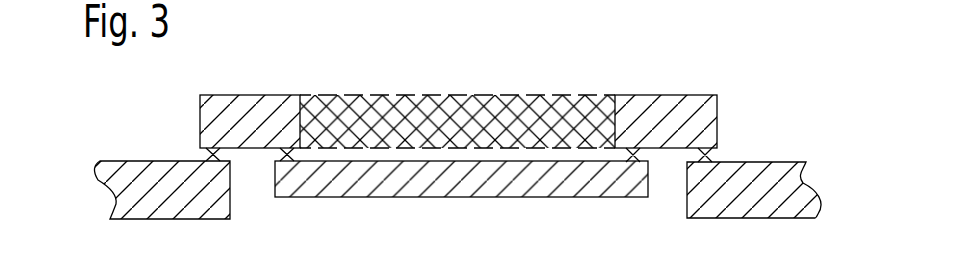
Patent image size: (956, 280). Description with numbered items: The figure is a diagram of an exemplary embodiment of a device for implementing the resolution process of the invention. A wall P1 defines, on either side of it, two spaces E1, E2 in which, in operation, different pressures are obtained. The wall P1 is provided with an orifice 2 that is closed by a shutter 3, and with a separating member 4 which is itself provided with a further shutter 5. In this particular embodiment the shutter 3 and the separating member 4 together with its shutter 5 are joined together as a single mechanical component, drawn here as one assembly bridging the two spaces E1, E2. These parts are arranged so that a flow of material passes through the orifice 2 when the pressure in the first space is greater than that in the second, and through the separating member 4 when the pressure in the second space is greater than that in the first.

The orifice 2 is at (262, 188).
The shutter 3 is at (635, 99).
The separating member 4 is at (537, 95).
The shutter 5 is at (565, 197).
The wall P1 is at (732, 162).
The space E1 is at (471, 221).
The space E2 is at (488, 74).